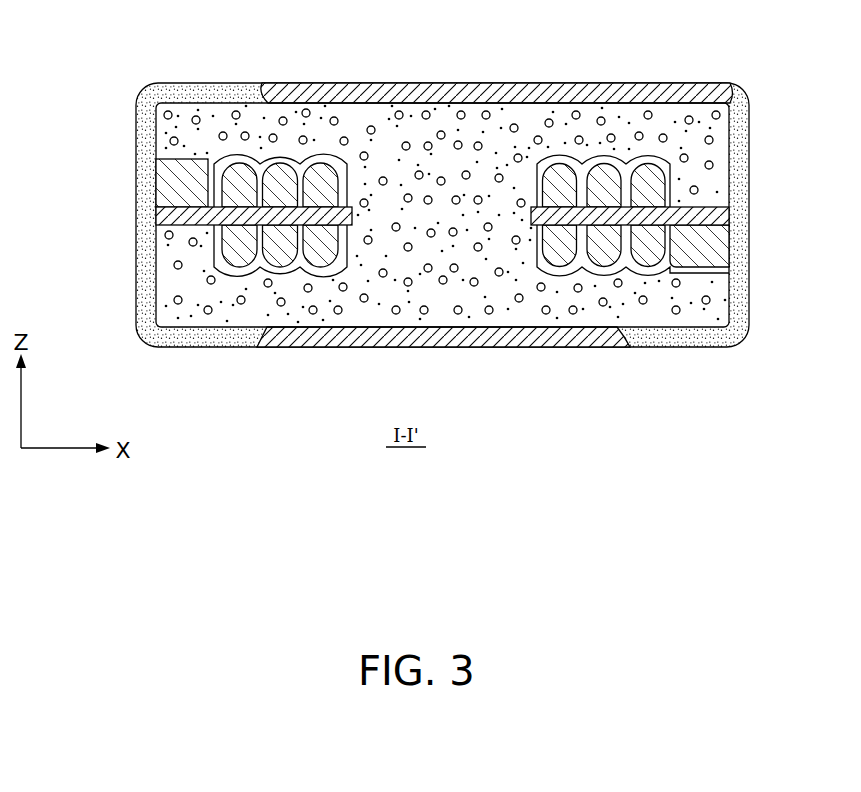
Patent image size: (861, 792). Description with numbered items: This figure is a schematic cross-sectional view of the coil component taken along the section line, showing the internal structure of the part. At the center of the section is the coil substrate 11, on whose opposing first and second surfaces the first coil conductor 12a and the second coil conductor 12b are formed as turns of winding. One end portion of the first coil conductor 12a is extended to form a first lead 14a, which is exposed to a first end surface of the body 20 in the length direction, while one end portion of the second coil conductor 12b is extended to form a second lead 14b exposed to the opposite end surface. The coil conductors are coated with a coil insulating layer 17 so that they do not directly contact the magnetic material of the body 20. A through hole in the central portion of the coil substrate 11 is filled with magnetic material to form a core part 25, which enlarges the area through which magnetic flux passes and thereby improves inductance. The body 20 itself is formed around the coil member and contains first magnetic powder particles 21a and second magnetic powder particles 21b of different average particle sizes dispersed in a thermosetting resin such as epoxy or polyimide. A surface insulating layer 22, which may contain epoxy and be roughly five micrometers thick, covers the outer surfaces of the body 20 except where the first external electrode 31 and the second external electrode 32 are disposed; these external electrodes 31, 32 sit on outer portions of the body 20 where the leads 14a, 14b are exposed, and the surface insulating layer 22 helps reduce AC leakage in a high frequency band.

The coil substrate 11 is at (172, 216).
The first coil conductor 12a is at (553, 160).
The second coil conductor 12b is at (329, 274).
The first lead 14a is at (165, 178).
The second lead 14b is at (723, 238).
The coil insulating layer 17 is at (172, 215).
The body 20 is at (696, 141).
The first magnetic powder particles 21a is at (621, 126).
The second magnetic powder particles 21b is at (656, 134).
The surface insulating layer 22 is at (533, 335).
The core part 25 is at (443, 212).
The first external electrode 31 is at (148, 212).
The second external electrode 32 is at (730, 172).